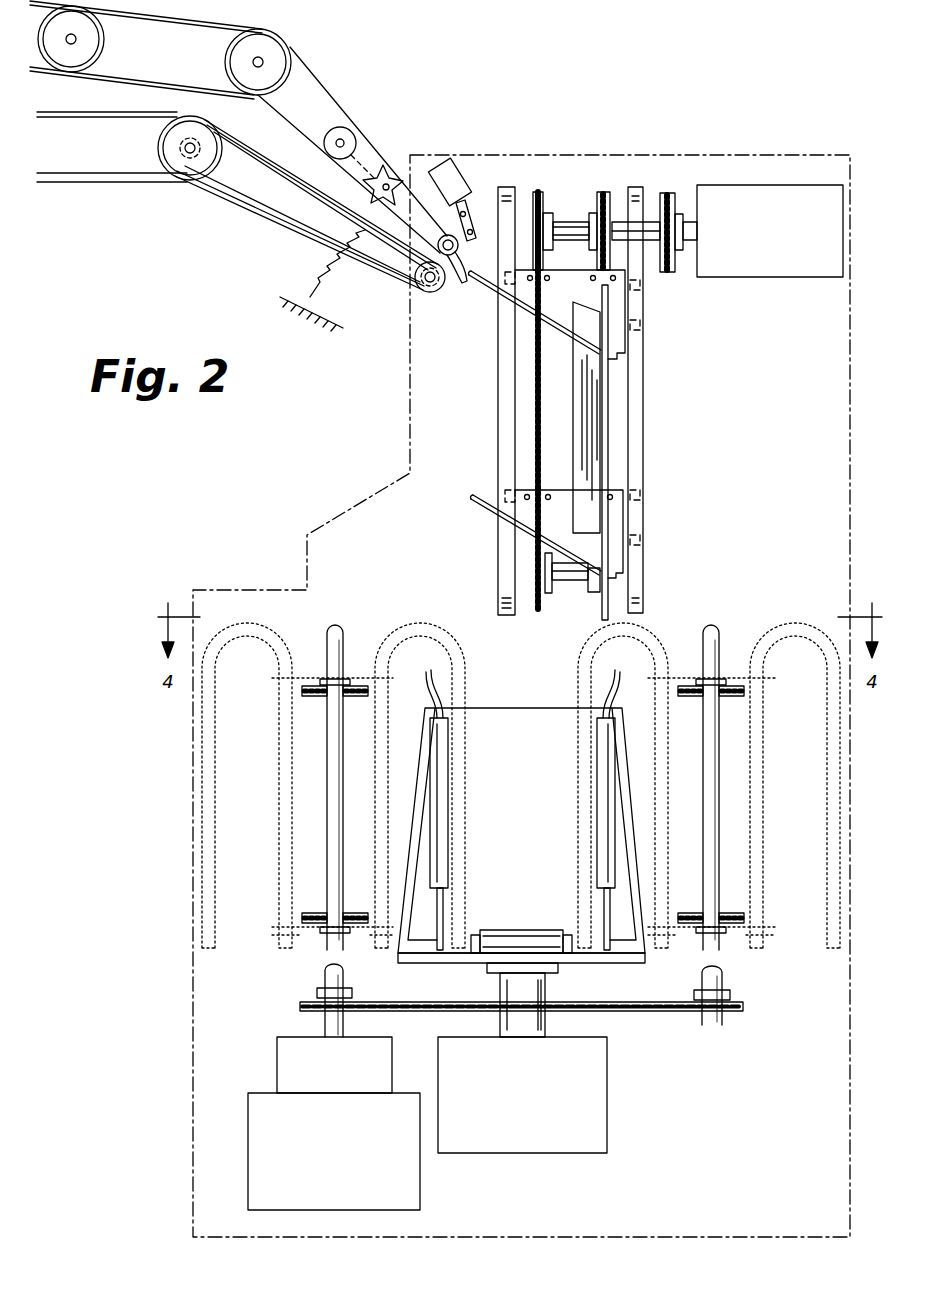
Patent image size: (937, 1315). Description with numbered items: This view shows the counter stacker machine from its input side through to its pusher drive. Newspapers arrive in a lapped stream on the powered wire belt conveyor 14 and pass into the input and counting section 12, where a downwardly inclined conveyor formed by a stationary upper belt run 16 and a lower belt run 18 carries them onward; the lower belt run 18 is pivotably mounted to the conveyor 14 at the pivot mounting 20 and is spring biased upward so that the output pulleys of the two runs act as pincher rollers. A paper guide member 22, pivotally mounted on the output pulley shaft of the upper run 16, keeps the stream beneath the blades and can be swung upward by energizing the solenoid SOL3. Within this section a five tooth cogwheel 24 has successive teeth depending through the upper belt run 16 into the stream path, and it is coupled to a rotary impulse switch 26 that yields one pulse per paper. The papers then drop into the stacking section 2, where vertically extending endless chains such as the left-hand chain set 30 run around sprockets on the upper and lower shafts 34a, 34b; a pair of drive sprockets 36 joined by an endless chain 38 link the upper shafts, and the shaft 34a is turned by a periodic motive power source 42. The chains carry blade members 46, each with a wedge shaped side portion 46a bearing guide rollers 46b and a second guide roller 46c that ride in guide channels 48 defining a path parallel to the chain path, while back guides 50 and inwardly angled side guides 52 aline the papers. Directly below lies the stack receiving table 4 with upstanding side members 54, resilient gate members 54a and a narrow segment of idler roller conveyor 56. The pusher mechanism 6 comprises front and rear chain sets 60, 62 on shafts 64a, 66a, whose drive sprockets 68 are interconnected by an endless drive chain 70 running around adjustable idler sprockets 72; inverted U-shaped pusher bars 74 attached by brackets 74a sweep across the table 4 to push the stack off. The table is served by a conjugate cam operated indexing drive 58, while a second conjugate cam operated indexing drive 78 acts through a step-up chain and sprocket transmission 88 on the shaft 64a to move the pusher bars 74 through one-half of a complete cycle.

The stacking section 2 is at (482, 392).
The stack receiving table 4 is at (515, 787).
The pusher mechanism 6 is at (377, 616).
The input and counting section 12 is at (380, 76).
The powered wire belt conveyor 14 is at (62, 103).
The upper belt run 16 is at (320, 73).
The lower belt run 18 is at (216, 197).
The pivot mounting 20 is at (184, 148).
The paper guide member 22 is at (463, 283).
The five tooth cogwheel 24 is at (389, 173).
The rotary impulse switch 26 is at (352, 136).
The solenoid SOL3 is at (455, 168).
The left-hand chain set 30 is at (545, 193).
The upper shaft 34a is at (614, 228).
The lower shaft 34b is at (577, 576).
The drive sprockets 36 is at (679, 250).
The endless chain 38 is at (676, 198).
The periodic motive power source 42 is at (775, 185).
The blade members 46 is at (478, 280).
The wedge shaped side portion 46a is at (532, 303).
The guide rollers 46b is at (642, 285).
The second guide roller 46c is at (642, 323).
The guide channels 48 is at (498, 405).
The back guides 50 is at (607, 428).
The side guides 52 is at (600, 398).
The side members 54 is at (440, 690).
The resilient gate members 54a is at (600, 738).
The idler roller conveyor segment 56 is at (519, 930).
The conjugate cam operated indexing drive 58 is at (607, 1086).
The front chain set 60 is at (322, 698).
The rear chain set 62 is at (696, 698).
The right-hand shaft 64a is at (325, 977).
The right-hand shaft 66a is at (725, 979).
The drive sprockets 68 is at (300, 1006).
The endless drive chain 70 is at (648, 1012).
The idler sprockets 72 is at (696, 995).
The pusher bars 74 is at (332, 791).
The brackets 74a is at (325, 678).
The second conjugate cam operated indexing drive 78 is at (420, 1190).
The transmission 88 is at (277, 1056).